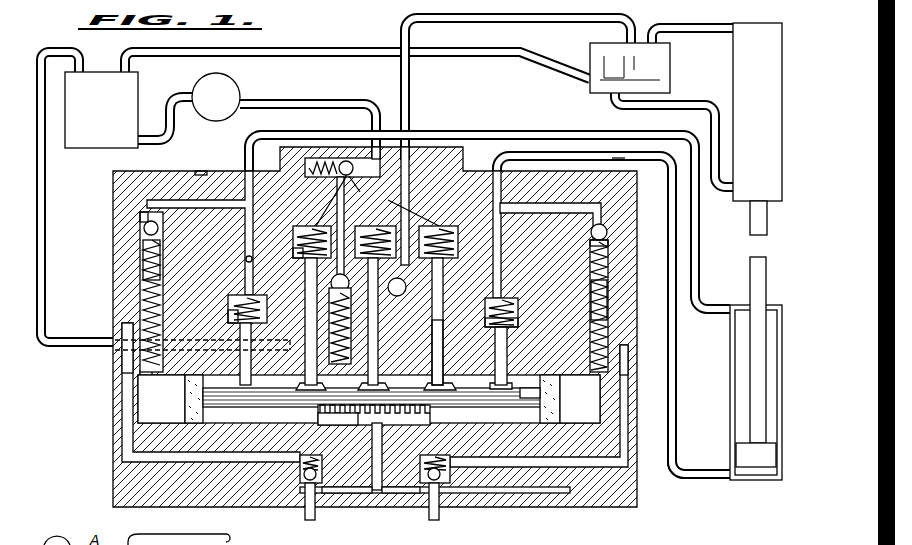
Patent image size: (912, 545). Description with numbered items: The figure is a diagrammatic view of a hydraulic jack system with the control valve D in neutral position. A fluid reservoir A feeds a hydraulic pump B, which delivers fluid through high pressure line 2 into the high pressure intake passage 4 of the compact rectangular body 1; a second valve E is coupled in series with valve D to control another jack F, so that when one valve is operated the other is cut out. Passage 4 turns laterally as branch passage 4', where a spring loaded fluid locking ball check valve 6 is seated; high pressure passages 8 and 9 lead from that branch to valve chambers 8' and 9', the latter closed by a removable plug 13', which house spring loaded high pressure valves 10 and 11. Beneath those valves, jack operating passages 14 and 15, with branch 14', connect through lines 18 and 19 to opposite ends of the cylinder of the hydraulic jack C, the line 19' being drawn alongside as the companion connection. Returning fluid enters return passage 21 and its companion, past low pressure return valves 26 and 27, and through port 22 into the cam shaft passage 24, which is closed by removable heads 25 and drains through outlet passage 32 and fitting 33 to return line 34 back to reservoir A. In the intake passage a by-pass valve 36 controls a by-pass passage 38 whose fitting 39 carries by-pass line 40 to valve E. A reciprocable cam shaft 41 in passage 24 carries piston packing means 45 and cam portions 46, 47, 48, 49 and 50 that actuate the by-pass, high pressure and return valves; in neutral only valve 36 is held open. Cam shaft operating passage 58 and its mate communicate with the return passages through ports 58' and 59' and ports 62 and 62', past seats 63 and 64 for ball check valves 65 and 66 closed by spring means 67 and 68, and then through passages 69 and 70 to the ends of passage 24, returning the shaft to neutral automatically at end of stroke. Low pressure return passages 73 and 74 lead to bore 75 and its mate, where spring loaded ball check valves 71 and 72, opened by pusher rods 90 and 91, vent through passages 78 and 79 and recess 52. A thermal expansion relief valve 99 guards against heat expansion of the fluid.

The body 1 is at (113, 188).
The high pressure line 2 is at (300, 104).
The high pressure intake passage 4 is at (381, 121).
The branch intake passage 4' is at (342, 143).
The fluid locking ball check valve 6 is at (346, 161).
The high pressure passage 8 is at (320, 201).
The valve chamber 8' is at (304, 297).
The high pressure passage 9 is at (399, 286).
The valve chamber 9' is at (445, 228).
The high pressure valve 10 is at (296, 254).
The high pressure valve 11 is at (445, 266).
The removable plug 13' is at (525, 234).
The jack operating passage 14 is at (251, 290).
The branch of jack operating passage 14' is at (220, 257).
The jack operating passage 15 is at (444, 318).
The line 18 is at (547, 135).
The line 19 is at (701, 466).
The pipe 19' is at (613, 314).
The return passage 21 is at (518, 305).
The port 22 is at (161, 399).
The cam shaft passage 24 is at (84, 399).
The removable heads 25 is at (580, 399).
The low pressure return valve 26 is at (228, 316).
The low pressure return valve 27 is at (518, 321).
The outlet passage 32 is at (272, 388).
The fitting 33 is at (338, 418).
The return line 34 is at (113, 341).
The high pressure by-pass valve 36 is at (404, 172).
The by-pass passage 38 is at (388, 300).
The fitting 39 is at (607, 287).
The by-pass line 40 is at (411, 85).
The cam shaft 41 is at (556, 418).
The piston packing means 45 is at (490, 386).
The cam portion 46 is at (373, 393).
The cam portion 47 is at (313, 393).
The cam portion 48 is at (434, 393).
The cam portion 49 is at (204, 399).
The cam portion 50 is at (524, 395).
The recess 52 is at (377, 490).
The cam shaft operating passage 58 is at (114, 292).
The port 58' is at (189, 163).
The port 59' is at (602, 163).
The port 62 is at (159, 233).
The port 62' is at (583, 216).
The seat 63 is at (144, 229).
The seat 64 is at (607, 232).
The ball check valve 65 is at (140, 222).
The ball check valve 66 is at (608, 241).
The spring means 67 is at (143, 258).
The spring means 68 is at (606, 263).
The passage 69 is at (141, 377).
The passage 70 is at (625, 374).
The spring loaded ball check valve 71 is at (300, 480).
The spring loaded ball check valve 72 is at (440, 478).
The low pressure return passage 73 is at (122, 368).
The low pressure return passage 74 is at (626, 420).
The bore 75 is at (127, 348).
The passage 78 is at (340, 493).
The passage 79 is at (405, 493).
The pusher rod 90 is at (310, 520).
The pusher rod 91 is at (428, 484).
The thermal expansion relief valve 99 is at (318, 326).
The fluid reservoir A is at (103, 76).
The hydraulic pump B is at (196, 96).
The hydraulic jack C is at (722, 398).
The valve D is at (100, 424).
The second valve E is at (680, 70).
The jack F is at (783, 100).